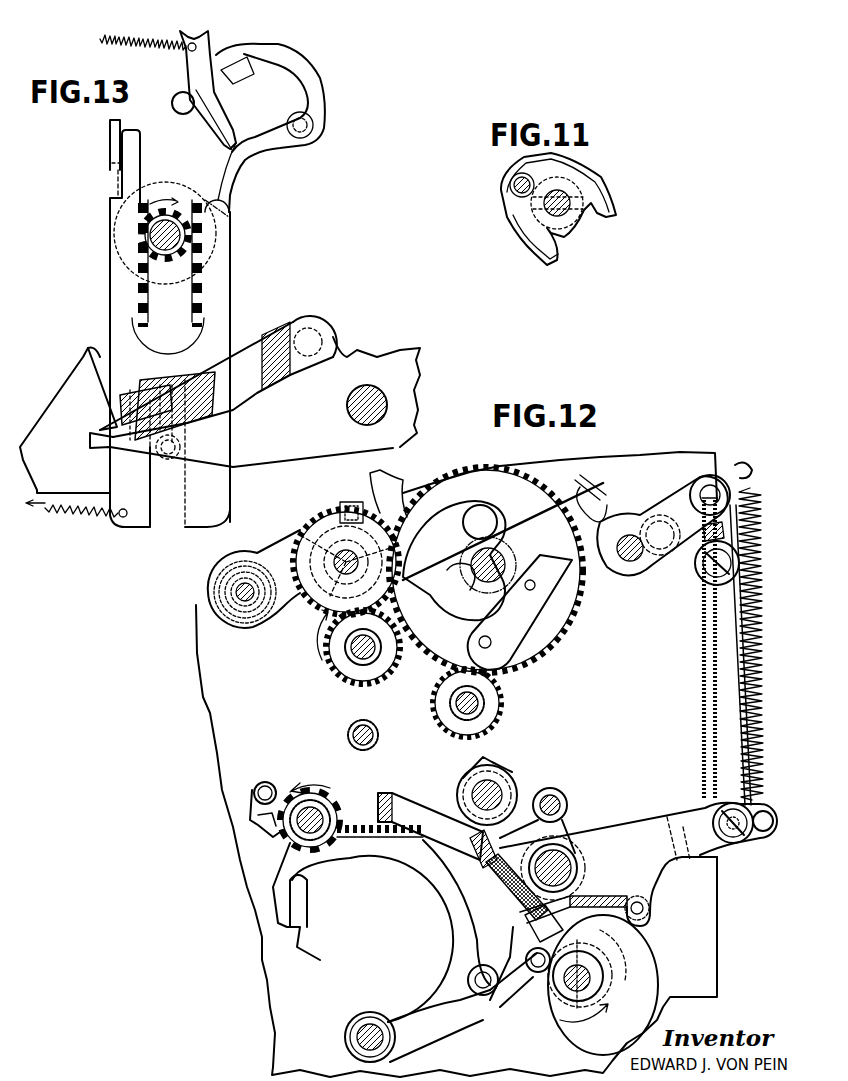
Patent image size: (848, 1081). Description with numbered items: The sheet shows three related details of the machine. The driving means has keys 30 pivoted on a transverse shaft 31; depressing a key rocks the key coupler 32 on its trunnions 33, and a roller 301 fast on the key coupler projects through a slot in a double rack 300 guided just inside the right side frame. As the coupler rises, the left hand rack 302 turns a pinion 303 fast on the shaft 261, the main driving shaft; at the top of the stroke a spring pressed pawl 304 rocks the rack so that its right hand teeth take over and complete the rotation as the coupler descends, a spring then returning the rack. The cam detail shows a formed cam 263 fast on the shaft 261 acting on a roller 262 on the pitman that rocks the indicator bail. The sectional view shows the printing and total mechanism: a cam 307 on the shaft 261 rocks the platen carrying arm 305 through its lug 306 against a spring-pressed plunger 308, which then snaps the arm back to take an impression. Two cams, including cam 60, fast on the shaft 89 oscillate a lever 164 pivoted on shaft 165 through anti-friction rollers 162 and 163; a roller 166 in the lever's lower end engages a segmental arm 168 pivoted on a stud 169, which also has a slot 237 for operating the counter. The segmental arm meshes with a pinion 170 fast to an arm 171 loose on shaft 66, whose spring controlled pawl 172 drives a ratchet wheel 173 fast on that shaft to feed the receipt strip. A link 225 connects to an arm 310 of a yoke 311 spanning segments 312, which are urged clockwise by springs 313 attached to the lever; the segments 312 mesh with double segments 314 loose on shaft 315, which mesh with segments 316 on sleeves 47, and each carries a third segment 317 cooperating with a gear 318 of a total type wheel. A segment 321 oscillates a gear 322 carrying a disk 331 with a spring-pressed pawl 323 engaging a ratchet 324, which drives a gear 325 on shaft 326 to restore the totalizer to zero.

In FIG. 13, the keys 30 is at (342, 368).
In FIG. 13, the transverse shaft 31 is at (366, 386).
In FIG. 13, the key coupler 32 is at (205, 382).
In FIG. 13, the trunnions 33 is at (313, 330).
In FIG. 12, the sleeves 47 is at (242, 575).
In FIG. 12, the cam 60 is at (652, 976).
In FIG. 12, the shaft 66 is at (327, 818).
In FIG. 12, the shaft 89 is at (590, 969).
In FIG. 12, the anti-friction roller 162 is at (538, 975).
In FIG. 12, the anti-friction roller 163 is at (650, 911).
In FIG. 12, the lever 164 is at (610, 837).
In FIG. 12, the shaft 165 is at (580, 872).
In FIG. 12, the anti-friction roller 166 is at (478, 988).
In FIG. 12, the segmental arm 168 is at (420, 889).
In FIG. 12, the stud 169 is at (362, 1027).
In FIG. 12, the pinion 170 is at (298, 795).
In FIG. 12, the arm 171 is at (292, 792).
In FIG. 12, the spring controlled pawl 172 is at (280, 822).
In FIG. 12, the ratchet wheel 173 is at (330, 810).
In FIG. 12, the link 225 is at (730, 636).
In FIG. 12, the slot 237 is at (291, 904).
In FIG. 13, the shaft 261 is at (172, 250).
In FIG. 11, the shaft 261 is at (545, 207).
In FIG. 12, the shaft 261 is at (477, 785).
In FIG. 11, the roller 262 is at (516, 198).
In FIG. 11, the cam 263 is at (512, 230).
In FIG. 13, the double rack 300 is at (206, 300).
In FIG. 13, the roller 301 is at (173, 390).
In FIG. 13, the left hand rack 302 is at (142, 302).
In FIG. 13, the pinion 303 is at (190, 288).
In FIG. 13, the spring pressed pawl 304 is at (213, 107).
In FIG. 12, the platen carrying arm 305 is at (443, 791).
In FIG. 12, the lug 306 is at (503, 874).
In FIG. 12, the cam 307 is at (470, 768).
In FIG. 12, the spring-pressed plunger 308 is at (520, 914).
In FIG. 12, the arm 310 is at (658, 520).
In FIG. 12, the yoke 311 is at (612, 475).
In FIG. 12, the segments 312 is at (597, 598).
In FIG. 12, the springs 313 is at (745, 613).
In FIG. 12, the double segments 314 is at (445, 548).
In FIG. 12, the shaft 315 is at (492, 591).
In FIG. 12, the segments 316 is at (378, 487).
In FIG. 12, the third segment 317 is at (448, 648).
In FIG. 12, the gear 318 is at (447, 698).
In FIG. 12, the segment 321 is at (520, 490).
In FIG. 12, the gear 322 is at (333, 540).
In FIG. 12, the spring-pressed pawl 323 is at (340, 520).
In FIG. 12, the ratchet 324 is at (322, 548).
In FIG. 12, the gear 325 is at (352, 676).
In FIG. 12, the shaft 326 is at (363, 665).
In FIG. 12, the disk 331 is at (386, 528).